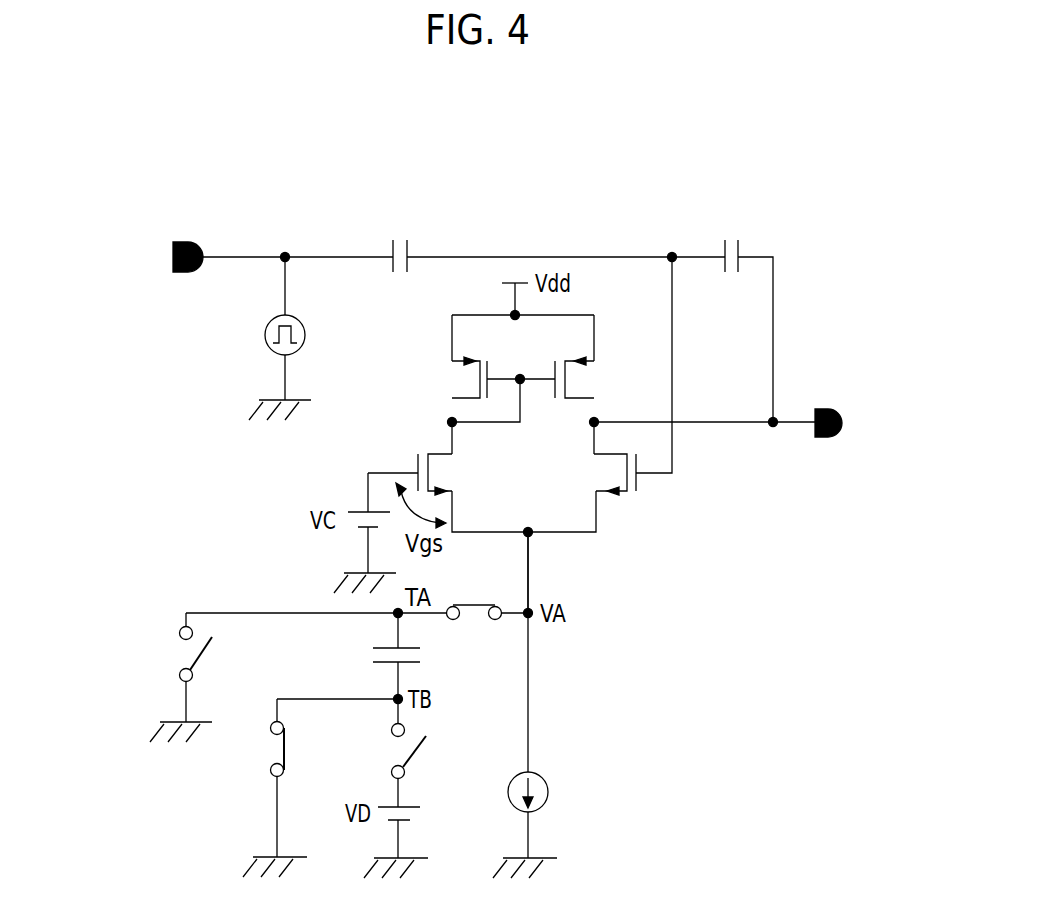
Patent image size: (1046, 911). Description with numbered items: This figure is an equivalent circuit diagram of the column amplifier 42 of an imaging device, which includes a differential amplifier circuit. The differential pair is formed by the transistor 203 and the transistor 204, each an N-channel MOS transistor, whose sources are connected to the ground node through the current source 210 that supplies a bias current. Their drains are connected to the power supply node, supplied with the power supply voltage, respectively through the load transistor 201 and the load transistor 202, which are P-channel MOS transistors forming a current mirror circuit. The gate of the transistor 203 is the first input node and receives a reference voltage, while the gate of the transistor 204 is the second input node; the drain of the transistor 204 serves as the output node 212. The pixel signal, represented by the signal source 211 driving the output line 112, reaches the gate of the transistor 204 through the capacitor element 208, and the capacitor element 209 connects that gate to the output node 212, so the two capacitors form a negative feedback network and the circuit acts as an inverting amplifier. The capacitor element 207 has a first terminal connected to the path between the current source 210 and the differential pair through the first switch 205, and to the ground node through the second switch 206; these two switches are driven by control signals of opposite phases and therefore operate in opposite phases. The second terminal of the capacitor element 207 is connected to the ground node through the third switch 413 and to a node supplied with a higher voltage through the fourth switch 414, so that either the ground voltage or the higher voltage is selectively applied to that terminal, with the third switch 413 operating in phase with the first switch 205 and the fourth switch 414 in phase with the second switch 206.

The column amplifier 42 is at (712, 161).
The output line 112 is at (182, 238).
The capacitor element 208 is at (400, 238).
The capacitor element 209 is at (733, 238).
The input signal source 211 is at (265, 338).
The load transistor 201 is at (460, 378).
The load transistor 202 is at (590, 378).
The transistor 203 is at (443, 473).
The transistor 204 is at (603, 470).
The output node 212 is at (830, 441).
The first switch 205 is at (478, 603).
The capacitor element 207 is at (426, 657).
The second switch 206 is at (182, 648).
The third switch 413 is at (265, 768).
The fourth switch 414 is at (420, 750).
The current source 210 is at (548, 773).